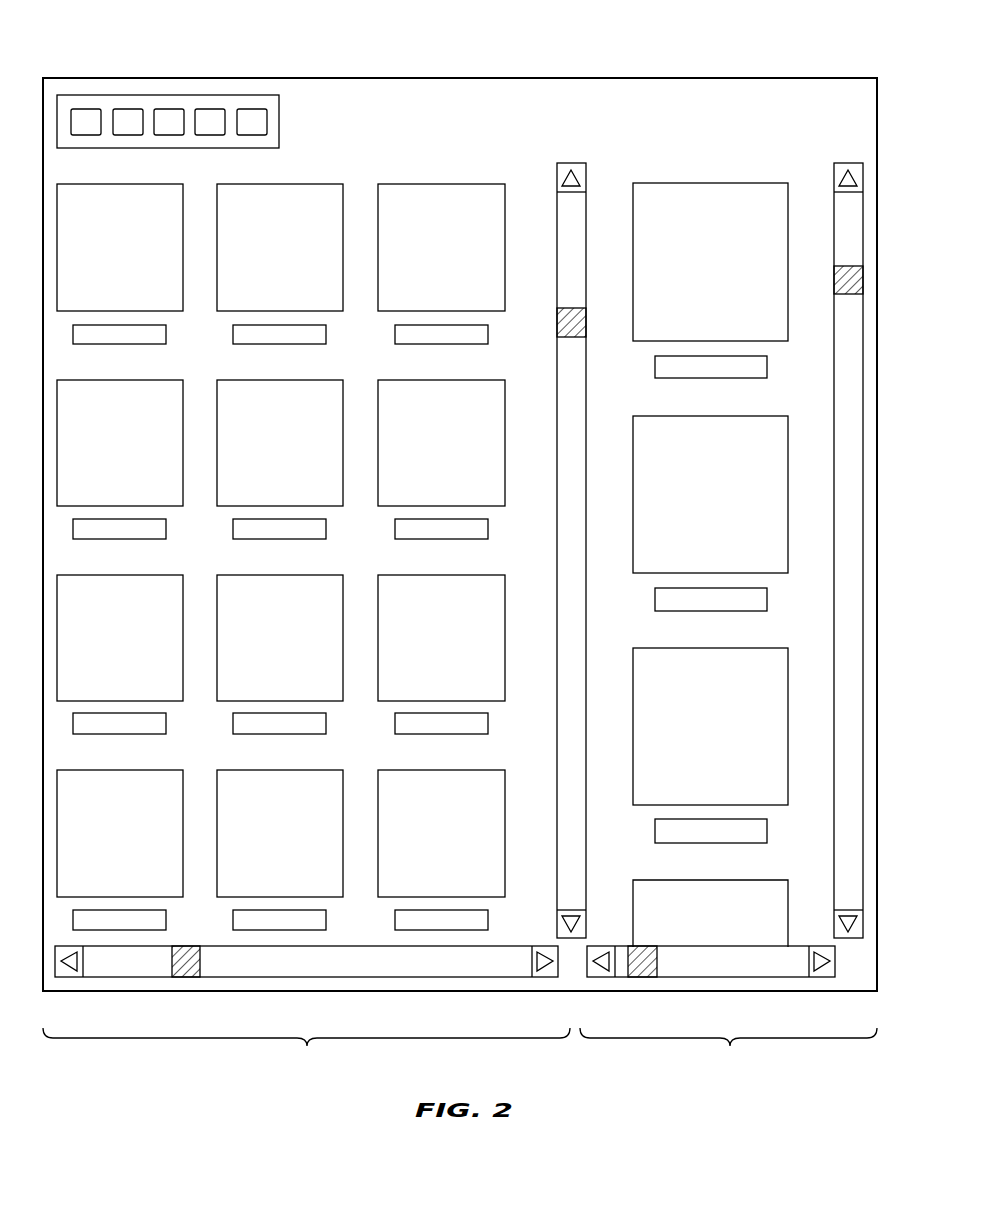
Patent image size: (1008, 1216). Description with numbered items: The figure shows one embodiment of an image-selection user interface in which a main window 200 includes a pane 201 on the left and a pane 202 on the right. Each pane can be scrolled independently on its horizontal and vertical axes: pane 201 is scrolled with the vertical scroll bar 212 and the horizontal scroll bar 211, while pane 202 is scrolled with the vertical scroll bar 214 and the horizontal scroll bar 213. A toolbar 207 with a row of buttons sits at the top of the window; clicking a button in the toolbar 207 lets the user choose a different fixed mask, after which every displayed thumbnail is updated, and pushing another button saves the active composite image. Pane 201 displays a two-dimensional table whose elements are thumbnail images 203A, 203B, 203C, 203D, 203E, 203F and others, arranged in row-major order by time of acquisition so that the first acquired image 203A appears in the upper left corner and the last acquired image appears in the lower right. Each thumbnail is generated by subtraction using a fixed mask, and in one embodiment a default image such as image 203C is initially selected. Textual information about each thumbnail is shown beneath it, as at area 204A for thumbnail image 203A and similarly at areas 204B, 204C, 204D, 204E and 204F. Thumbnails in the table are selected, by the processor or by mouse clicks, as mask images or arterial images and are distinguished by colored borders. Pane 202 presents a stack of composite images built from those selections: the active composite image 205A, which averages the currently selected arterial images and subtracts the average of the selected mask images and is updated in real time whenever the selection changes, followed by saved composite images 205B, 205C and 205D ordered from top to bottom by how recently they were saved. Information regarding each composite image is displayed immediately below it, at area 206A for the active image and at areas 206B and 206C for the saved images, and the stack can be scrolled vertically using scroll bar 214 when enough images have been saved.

The main window 200 is at (782, 43).
The pane 201 is at (306, 1051).
The pane 202 is at (728, 1051).
The thumbnail image 203A is at (117, 185).
The thumbnail image 203B is at (277, 185).
The thumbnail image 203C is at (439, 185).
The thumbnail image 203D is at (117, 381).
The thumbnail image 203E is at (277, 381).
The thumbnail image 203F is at (439, 381).
The area 204A is at (166, 334).
The image label 204B is at (326, 334).
The image label 204C is at (488, 334).
The image label 204D is at (166, 529).
The image label 204E is at (326, 529).
The image label 204F is at (488, 529).
The active composite image 205A is at (698, 184).
The composite image 205B is at (698, 417).
The composite image 205C is at (698, 649).
The composite image 205D is at (698, 881).
The area 206A is at (767, 367).
The area 206B is at (767, 599).
The area 206C is at (767, 831).
The toolbar 207 is at (281, 123).
The scroll bar 211 is at (400, 968).
The scroll bar 212 is at (580, 210).
The scroll bar 213 is at (725, 970).
The scroll bar 214 is at (840, 210).